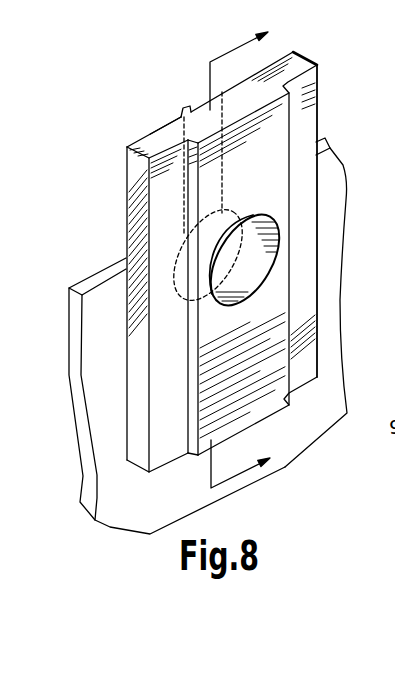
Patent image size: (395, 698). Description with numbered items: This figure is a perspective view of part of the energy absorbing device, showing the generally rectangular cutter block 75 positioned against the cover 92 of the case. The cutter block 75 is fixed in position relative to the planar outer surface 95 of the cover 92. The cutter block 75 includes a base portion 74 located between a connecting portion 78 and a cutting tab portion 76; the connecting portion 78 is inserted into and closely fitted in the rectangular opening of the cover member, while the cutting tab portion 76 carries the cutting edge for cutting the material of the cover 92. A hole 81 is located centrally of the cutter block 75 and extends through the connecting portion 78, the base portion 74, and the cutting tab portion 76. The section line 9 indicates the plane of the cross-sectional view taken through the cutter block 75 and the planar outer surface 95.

The base portion 74 is at (180, 117).
The cutter block 75 is at (171, 110).
The cutting tab portion 76 is at (200, 107).
The connecting portion 78 is at (190, 172).
The hole 81 is at (263, 252).
The cover 92 is at (72, 325).
The planar outer surface 95 is at (305, 422).
The section line 9- 9 is at (250, 250).